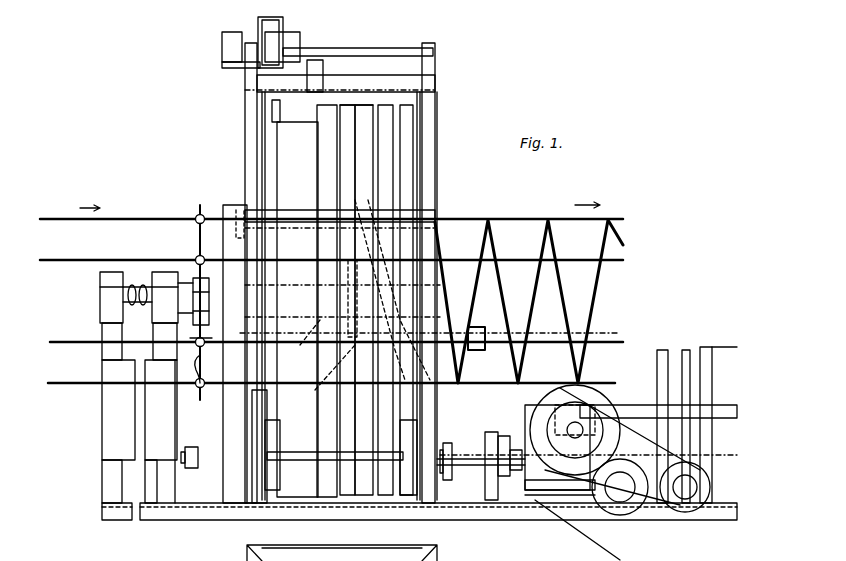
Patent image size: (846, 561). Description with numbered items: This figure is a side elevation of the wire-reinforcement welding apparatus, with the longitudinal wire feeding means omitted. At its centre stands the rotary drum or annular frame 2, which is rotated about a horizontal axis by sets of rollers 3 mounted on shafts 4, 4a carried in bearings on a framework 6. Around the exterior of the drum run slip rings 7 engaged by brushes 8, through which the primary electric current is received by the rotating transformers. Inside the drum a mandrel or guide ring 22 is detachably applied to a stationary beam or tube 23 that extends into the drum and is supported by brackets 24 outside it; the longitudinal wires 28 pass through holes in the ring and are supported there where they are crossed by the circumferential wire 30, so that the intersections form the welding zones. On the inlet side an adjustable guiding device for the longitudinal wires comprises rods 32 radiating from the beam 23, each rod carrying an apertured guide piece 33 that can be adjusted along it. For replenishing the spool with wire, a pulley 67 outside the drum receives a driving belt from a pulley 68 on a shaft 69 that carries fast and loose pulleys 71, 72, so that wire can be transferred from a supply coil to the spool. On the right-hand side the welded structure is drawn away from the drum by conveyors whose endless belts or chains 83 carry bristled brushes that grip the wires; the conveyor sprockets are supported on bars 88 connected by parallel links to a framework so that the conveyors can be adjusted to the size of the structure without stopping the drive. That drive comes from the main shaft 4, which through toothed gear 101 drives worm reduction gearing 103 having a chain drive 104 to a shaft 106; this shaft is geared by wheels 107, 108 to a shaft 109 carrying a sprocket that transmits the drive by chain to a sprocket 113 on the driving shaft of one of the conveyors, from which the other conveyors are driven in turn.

The drum or annular frame 2 is at (285, 137).
The rollers 3 is at (272, 112).
The shaft 4 is at (188, 465).
The shaft 4a is at (310, 455).
The framework 6 is at (437, 145).
The slip rings 7 is at (375, 105).
The brushes 8 is at (368, 215).
The mandrel or guide ring 22 is at (318, 392).
The stationary beam or tube 23 is at (305, 346).
The brackets 24 is at (128, 298).
The longitudinal wires 28 is at (95, 258).
The circumferential wire 30 is at (570, 300).
The rods 32 is at (197, 217).
The apertured guide piece 33 is at (210, 255).
The pulley 67 is at (230, 215).
The pulley 68 is at (222, 43).
The shaft 69 is at (400, 50).
The fast pulley 71 is at (272, 38).
The loose pulley 72 is at (300, 45).
The endless belts or chains 83 is at (640, 405).
The bars 88 is at (722, 400).
The toothed gear 101 is at (492, 432).
The worm reduction gearing 103 is at (532, 418).
The chain drive 104 is at (565, 475).
The shaft 106 is at (618, 490).
The wheel 107 is at (622, 515).
The wheel 108 is at (706, 505).
The shaft 109 is at (685, 500).
The sprocket 113 is at (620, 373).